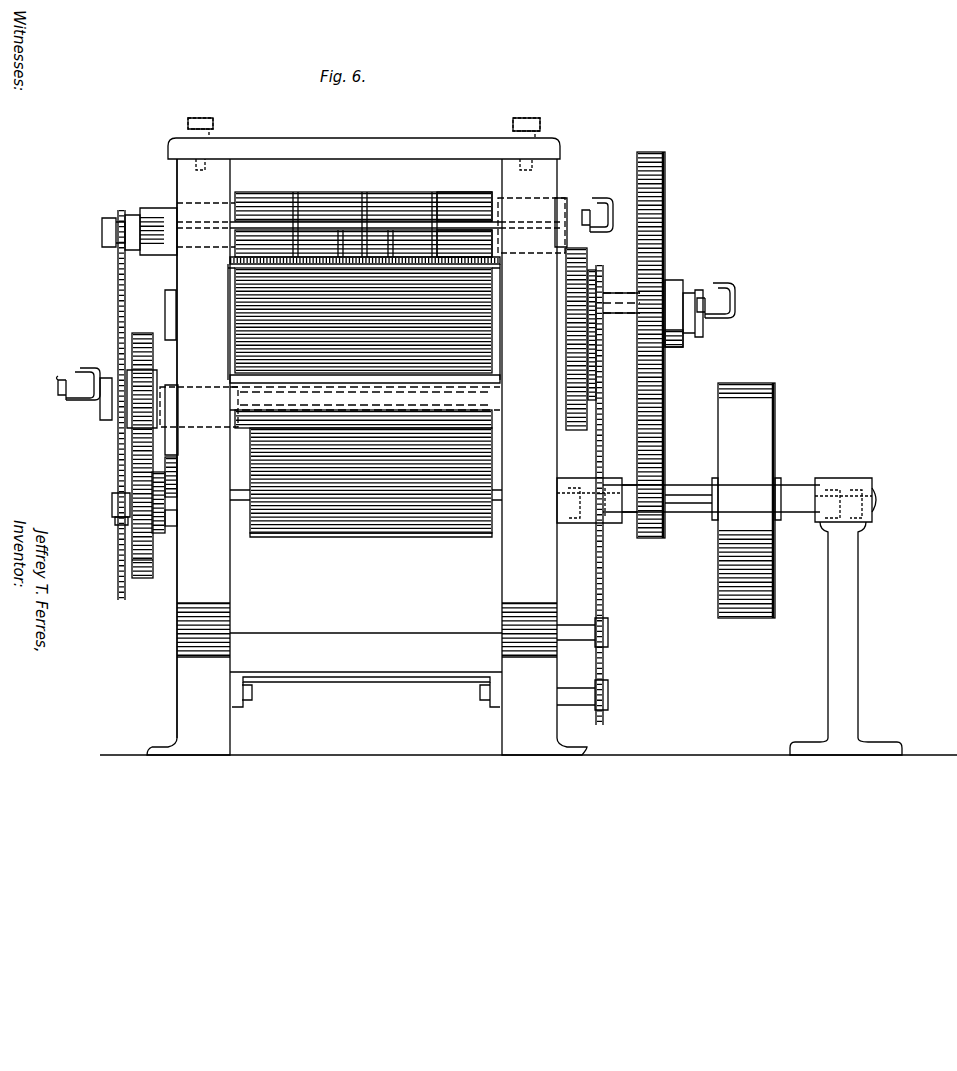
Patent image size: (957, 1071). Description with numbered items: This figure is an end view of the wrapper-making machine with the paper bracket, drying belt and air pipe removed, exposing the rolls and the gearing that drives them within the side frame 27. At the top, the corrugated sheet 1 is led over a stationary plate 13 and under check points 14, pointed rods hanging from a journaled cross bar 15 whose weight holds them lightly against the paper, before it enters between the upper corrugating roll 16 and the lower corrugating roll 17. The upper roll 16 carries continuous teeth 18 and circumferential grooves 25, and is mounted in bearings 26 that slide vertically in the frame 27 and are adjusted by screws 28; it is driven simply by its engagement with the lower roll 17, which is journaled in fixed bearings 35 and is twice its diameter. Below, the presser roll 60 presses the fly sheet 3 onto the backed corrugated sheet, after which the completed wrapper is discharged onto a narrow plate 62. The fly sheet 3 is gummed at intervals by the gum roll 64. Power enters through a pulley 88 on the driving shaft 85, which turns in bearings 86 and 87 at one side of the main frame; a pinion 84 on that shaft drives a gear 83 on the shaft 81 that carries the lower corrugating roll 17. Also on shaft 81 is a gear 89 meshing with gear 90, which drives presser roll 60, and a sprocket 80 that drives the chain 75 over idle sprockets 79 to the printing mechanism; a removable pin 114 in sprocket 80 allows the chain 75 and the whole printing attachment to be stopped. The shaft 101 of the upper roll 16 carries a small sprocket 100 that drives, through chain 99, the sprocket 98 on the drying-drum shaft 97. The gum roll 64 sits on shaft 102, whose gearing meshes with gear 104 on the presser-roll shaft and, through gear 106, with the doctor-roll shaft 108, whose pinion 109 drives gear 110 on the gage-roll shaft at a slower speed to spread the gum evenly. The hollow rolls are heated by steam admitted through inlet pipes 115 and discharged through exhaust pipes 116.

The corrugated sheet 1 is at (323, 255).
The fly sheet 3 is at (357, 535).
The stationary plate 13 is at (232, 262).
The check points 14 is at (292, 245).
The cross bar 15 is at (372, 225).
The upper corrugating roll 16 is at (474, 200).
The lower corrugating roll 17 is at (236, 302).
The continuous teeth 18 is at (452, 200).
The circumferential grooves 25 is at (296, 192).
The bearings 26 is at (165, 208).
The side frame 27 is at (538, 155).
The screws 28 is at (201, 117).
The fixed bearings 35 is at (166, 310).
The presser roll 60 is at (478, 392).
The narrow plate 62 is at (478, 376).
The gum roll 64 is at (256, 538).
The chain 75 is at (602, 430).
The idle sprockets 79 is at (610, 628).
The sprocket 80 is at (640, 285).
The shaft 81 is at (715, 285).
The gear 83 is at (668, 200).
The pinion 84 is at (657, 490).
The driving shaft 85 is at (696, 506).
The bearing 86 is at (590, 512).
The bearing 87 is at (838, 486).
The pulley 88 is at (746, 500).
The gear 89 is at (600, 252).
The gear 90 is at (590, 398).
The shaft 97 is at (114, 518).
The sprocket 98 is at (113, 515).
The chain 99 is at (118, 283).
The small sprocket 100 is at (125, 238).
The shaft 101 is at (104, 236).
The shaft 102 is at (172, 505).
The gear 104 is at (140, 448).
The gear 106 is at (162, 535).
The shaft 108 is at (150, 570).
The pinion 109 is at (172, 527).
The gear 110 is at (162, 470).
The pin 114 is at (672, 350).
The inlet pipes 115 is at (82, 368).
The exhaust pipes 116 is at (58, 378).